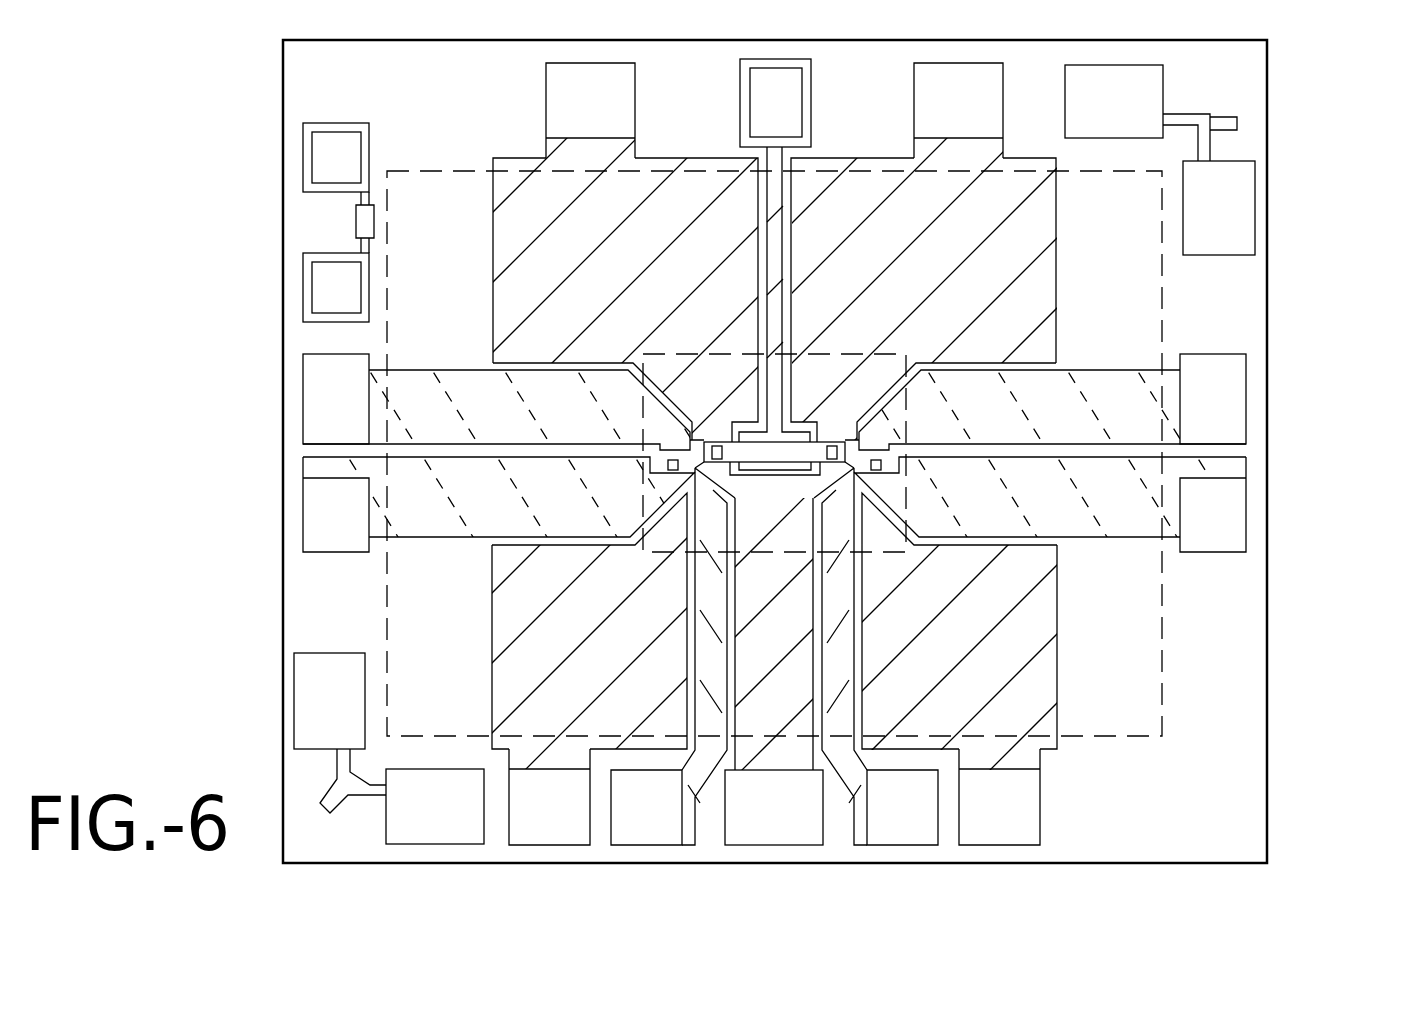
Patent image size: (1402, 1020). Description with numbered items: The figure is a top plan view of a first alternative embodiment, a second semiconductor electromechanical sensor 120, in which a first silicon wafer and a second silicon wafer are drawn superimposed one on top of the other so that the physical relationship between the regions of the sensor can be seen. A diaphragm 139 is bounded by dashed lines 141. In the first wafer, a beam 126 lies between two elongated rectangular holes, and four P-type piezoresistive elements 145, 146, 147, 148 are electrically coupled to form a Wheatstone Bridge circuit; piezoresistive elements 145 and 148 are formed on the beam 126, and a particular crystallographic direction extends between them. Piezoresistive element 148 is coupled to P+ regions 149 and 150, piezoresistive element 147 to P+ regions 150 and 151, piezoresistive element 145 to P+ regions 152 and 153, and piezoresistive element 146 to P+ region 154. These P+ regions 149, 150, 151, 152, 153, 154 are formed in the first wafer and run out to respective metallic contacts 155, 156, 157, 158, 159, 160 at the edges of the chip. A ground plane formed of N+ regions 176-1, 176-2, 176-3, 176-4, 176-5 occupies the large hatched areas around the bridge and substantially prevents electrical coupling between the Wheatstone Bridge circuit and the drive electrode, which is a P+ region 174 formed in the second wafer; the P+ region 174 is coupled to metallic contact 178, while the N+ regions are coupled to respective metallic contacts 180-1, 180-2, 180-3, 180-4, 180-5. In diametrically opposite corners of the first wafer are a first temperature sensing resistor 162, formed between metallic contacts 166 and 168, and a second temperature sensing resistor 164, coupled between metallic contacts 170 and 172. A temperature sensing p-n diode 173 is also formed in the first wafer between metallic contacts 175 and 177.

The second semiconductor electromechanical sensor 120 is at (1286, 335).
The beam 126 is at (781, 459).
The diaphragm 139 is at (415, 346).
The dashed lines 141 is at (424, 170).
The piezoresistive element 145 is at (833, 446).
The piezoresistive element 146 is at (881, 470).
The piezoresistive element 147 is at (716, 446).
The piezoresistive element 148 is at (668, 470).
The P+ region 149 is at (470, 510).
The P+ region 150 is at (697, 784).
The P+ region 151 is at (472, 422).
The P+ region 152 is at (1031, 420).
The P+ region 153 is at (860, 778).
The P+ region 154 is at (1039, 508).
The metallic contact 155 is at (307, 532).
The metallic contact 156 is at (621, 822).
The metallic contact 157 is at (309, 415).
The metallic contact 158 is at (1192, 420).
The metallic contact 159 is at (881, 818).
The metallic contact 160 is at (1192, 532).
The first temperature sensing resistor 162 is at (1188, 136).
The second temperature sensing resistor 164 is at (364, 768).
The metallic contact 166 is at (1094, 112).
The metallic contact 168 is at (1199, 223).
The metallic contact 170 is at (310, 713).
The metallic contact 172 is at (415, 822).
The temperature sensing p-n diode 173 is at (374, 228).
The P+ region 174 is at (811, 158).
The metallic contact 175 is at (315, 168).
The metallic contact 177 is at (315, 300).
The metallic contact 178 is at (756, 115).
The N+ region 176-1 is at (988, 652).
The N+ region 176-2 is at (626, 653).
The N+ region 176-3 is at (944, 273).
The N+ region 176-4 is at (640, 273).
The N+ region 176-5 is at (806, 652).
The metallic contact 180-1 is at (1030, 823).
The metallic contact 180-2 is at (581, 822).
The metallic contact 180-3 is at (990, 111).
The metallic contact 180-4 is at (626, 110).
The metallic contact 180-5 is at (807, 822).